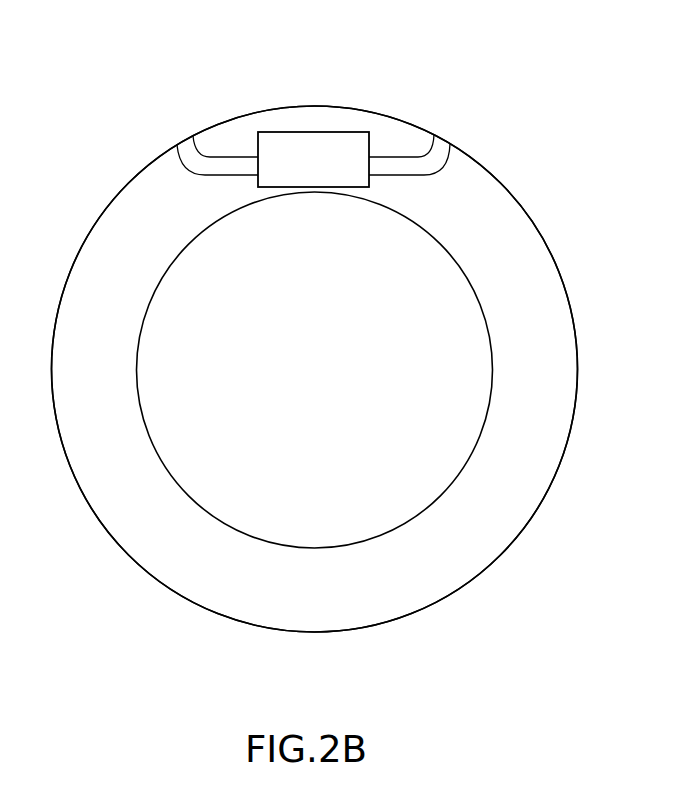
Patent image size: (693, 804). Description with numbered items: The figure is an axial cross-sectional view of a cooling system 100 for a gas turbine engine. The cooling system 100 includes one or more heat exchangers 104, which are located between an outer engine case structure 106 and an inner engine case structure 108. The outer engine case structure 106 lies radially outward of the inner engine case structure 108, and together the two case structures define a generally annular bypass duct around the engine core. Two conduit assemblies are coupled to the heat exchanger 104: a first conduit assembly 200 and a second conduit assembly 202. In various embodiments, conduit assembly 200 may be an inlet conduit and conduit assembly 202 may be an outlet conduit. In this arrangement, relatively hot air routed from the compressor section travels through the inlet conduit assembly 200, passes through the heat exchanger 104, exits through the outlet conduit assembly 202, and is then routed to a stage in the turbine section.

The cooling system 100 is at (548, 122).
The heat exchanger 104 is at (313, 170).
The outer engine case structure 106 is at (555, 267).
The inner engine case structure 108 is at (158, 460).
The conduit assembly 200 is at (195, 160).
The conduit assembly 202 is at (403, 165).